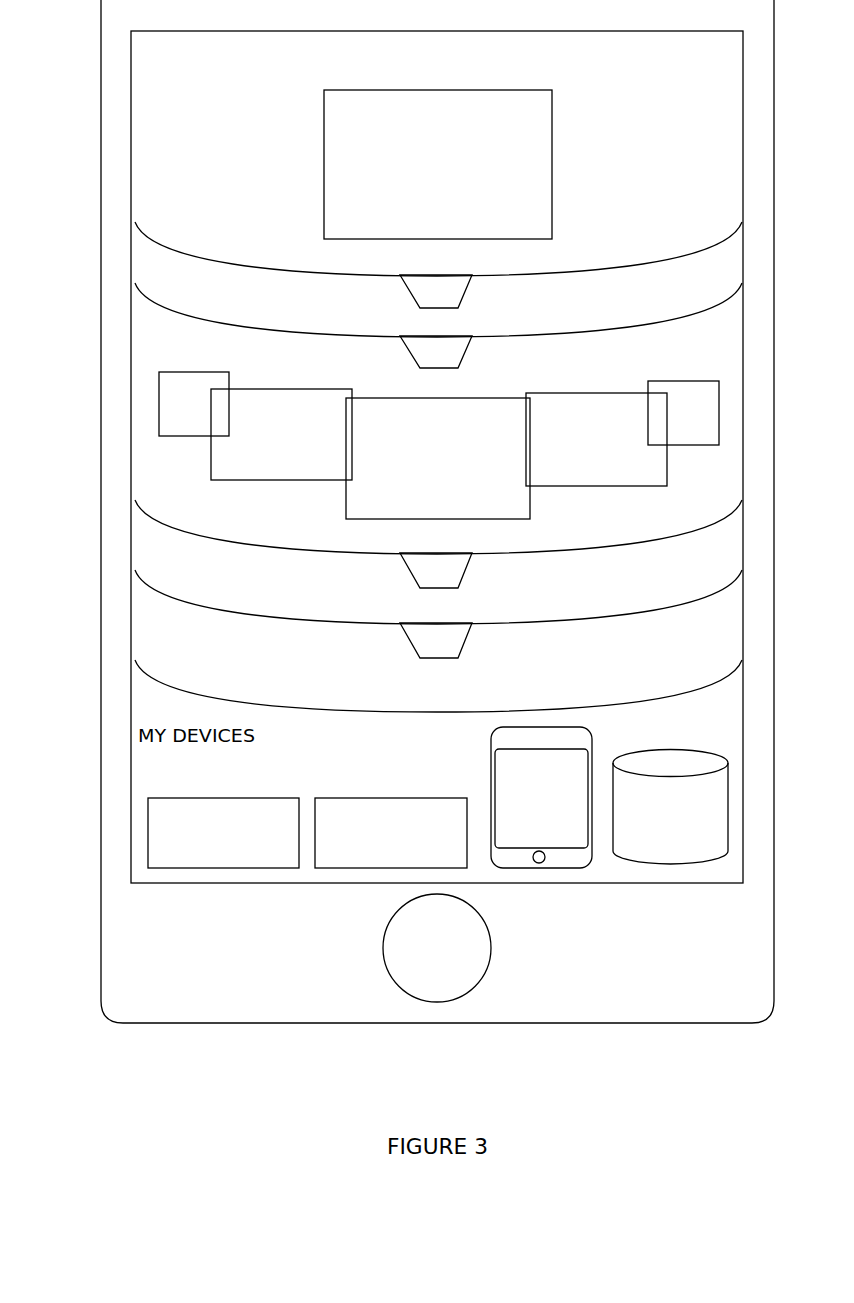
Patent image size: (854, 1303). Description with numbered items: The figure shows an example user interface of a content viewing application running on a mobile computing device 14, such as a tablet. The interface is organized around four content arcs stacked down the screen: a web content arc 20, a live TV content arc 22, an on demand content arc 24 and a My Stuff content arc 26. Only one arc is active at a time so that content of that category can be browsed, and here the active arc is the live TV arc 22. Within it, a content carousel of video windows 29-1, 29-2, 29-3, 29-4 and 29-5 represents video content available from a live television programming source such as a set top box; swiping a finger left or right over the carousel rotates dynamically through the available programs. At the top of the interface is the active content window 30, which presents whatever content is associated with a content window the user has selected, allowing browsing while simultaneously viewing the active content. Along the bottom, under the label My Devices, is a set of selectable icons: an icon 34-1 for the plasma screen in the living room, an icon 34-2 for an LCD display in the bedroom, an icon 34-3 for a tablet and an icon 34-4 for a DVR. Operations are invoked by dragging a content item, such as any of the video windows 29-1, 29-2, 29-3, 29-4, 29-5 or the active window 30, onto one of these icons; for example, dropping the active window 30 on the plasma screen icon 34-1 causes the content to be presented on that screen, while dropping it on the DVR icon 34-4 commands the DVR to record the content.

The mobile computing device 14 is at (100, 66).
The web content arc 20 is at (145, 238).
The live TV content arc 22 is at (145, 299).
The on demand content arc 24 is at (145, 517).
The My Stuff content arc 26 is at (145, 585).
The active content window 30 is at (438, 164).
The video window 29-1 is at (194, 404).
The video window 29-2 is at (281, 434).
The video window 29-3 is at (438, 458).
The video window 29-4 is at (596, 439).
The video window 29-5 is at (683, 413).
The plasma screen icon 34-1 is at (223, 823).
The LCD device icon 34-2 is at (391, 823).
The tablet device icon 34-3 is at (491, 780).
The DVR icon 34-4 is at (670, 795).